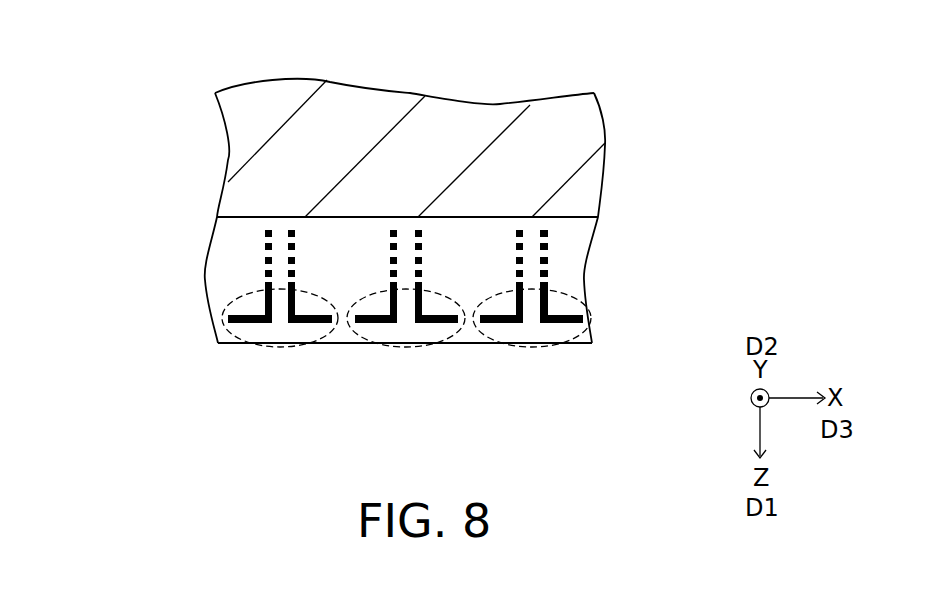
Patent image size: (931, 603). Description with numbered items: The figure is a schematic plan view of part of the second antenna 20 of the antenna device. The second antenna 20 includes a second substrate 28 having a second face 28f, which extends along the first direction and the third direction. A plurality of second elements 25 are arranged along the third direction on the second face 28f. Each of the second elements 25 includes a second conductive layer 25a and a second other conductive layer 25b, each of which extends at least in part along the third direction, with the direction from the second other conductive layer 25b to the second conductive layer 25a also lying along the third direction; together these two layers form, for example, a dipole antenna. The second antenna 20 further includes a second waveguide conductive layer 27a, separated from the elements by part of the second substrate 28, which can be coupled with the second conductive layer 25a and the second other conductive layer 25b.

The second antenna 20 is at (192, 118).
The second waveguide conductive layer 27a is at (553, 143).
The second substrate 28 is at (572, 237).
The second face 28f is at (568, 280).
The second element 25 is at (397, 350).
The second conductive layer 25a is at (315, 323).
The second other conductive layer 25b is at (252, 323).